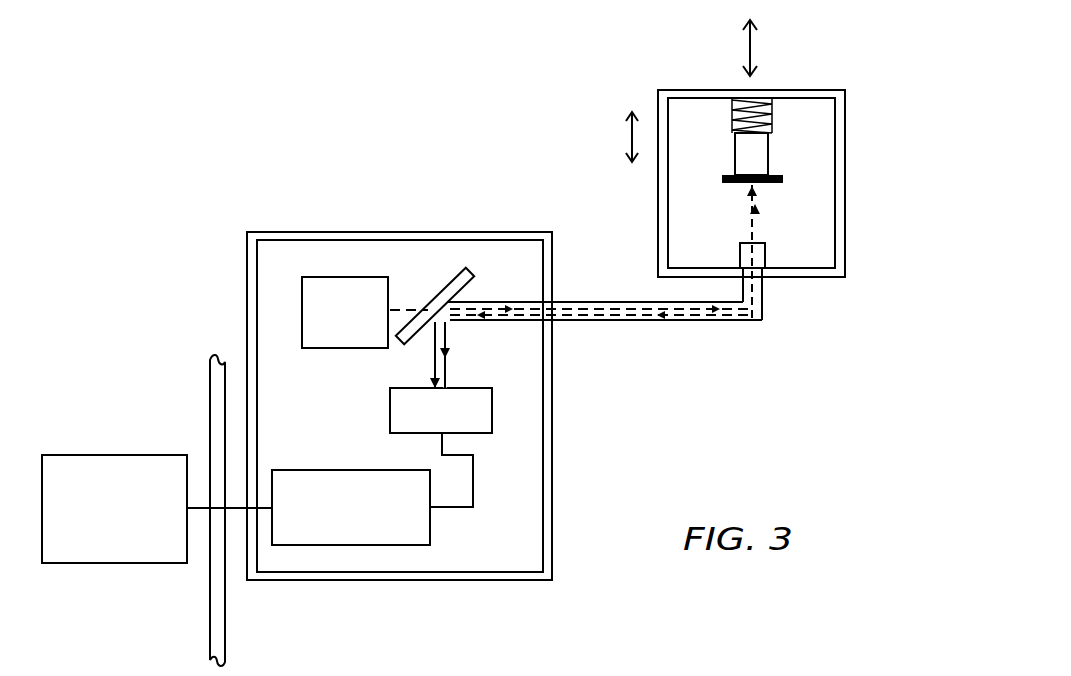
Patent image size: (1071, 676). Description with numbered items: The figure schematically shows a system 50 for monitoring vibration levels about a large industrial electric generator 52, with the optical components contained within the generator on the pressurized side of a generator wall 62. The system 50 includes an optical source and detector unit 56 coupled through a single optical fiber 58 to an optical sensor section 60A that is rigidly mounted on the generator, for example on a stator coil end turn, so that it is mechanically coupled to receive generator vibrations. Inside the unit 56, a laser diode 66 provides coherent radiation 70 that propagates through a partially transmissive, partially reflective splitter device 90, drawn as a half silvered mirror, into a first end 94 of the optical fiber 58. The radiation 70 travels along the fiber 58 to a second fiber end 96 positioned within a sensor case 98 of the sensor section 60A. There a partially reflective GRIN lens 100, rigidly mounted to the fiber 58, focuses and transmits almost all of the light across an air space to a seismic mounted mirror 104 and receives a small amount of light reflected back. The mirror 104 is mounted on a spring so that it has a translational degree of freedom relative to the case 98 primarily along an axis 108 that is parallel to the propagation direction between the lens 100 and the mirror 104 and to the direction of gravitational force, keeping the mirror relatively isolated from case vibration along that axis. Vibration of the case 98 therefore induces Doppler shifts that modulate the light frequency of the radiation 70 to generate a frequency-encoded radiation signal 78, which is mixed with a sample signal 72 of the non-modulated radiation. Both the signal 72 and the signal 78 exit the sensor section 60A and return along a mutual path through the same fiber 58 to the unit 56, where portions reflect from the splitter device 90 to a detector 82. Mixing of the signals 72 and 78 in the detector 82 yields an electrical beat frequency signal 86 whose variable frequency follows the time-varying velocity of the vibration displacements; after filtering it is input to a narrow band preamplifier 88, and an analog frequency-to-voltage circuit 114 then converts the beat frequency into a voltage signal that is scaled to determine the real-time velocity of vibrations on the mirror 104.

The system 50 is at (418, 142).
The industrial electric generator 52 is at (213, 510).
The optical source and detector unit 56 is at (263, 216).
The optical fiber 58 is at (607, 325).
The optical sensor section 60A is at (744, 170).
The generator wall 62 is at (227, 600).
The laser diode 66 is at (302, 292).
The coherent radiation 70 is at (413, 310).
The sample signal 72 is at (672, 318).
The frequency-encoded radiation signal 78 is at (732, 318).
The detector 82 is at (495, 413).
The beat frequency signal 86 is at (473, 478).
The narrow band preamplifier 88 is at (348, 545).
The splitter device 90 is at (460, 272).
The first end of the optical fiber 94 is at (450, 302).
The second fiber end 96 is at (764, 279).
The sensor case 98 is at (847, 118).
The GRIN lens 100 is at (766, 258).
The seismic mounted mirror 104 is at (780, 178).
The axis 108 is at (748, 50).
The frequency-to-voltage circuit 114 is at (140, 455).